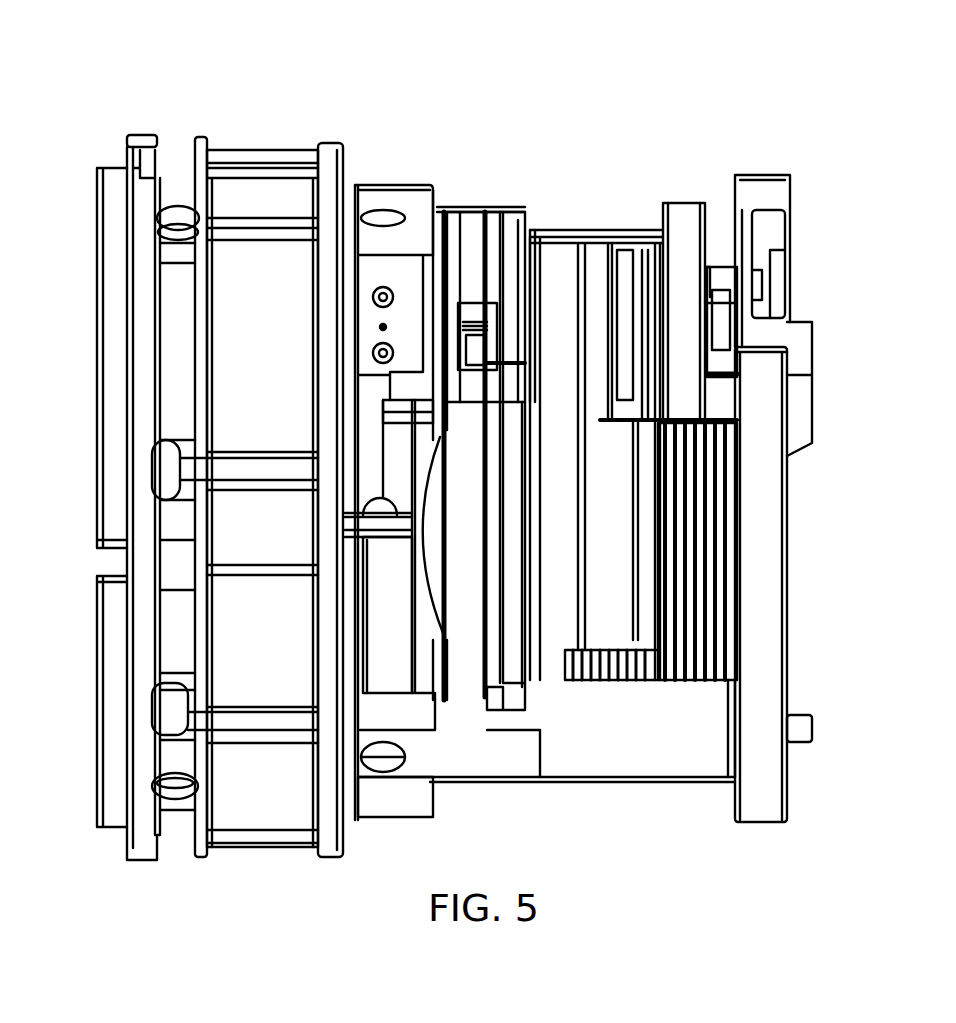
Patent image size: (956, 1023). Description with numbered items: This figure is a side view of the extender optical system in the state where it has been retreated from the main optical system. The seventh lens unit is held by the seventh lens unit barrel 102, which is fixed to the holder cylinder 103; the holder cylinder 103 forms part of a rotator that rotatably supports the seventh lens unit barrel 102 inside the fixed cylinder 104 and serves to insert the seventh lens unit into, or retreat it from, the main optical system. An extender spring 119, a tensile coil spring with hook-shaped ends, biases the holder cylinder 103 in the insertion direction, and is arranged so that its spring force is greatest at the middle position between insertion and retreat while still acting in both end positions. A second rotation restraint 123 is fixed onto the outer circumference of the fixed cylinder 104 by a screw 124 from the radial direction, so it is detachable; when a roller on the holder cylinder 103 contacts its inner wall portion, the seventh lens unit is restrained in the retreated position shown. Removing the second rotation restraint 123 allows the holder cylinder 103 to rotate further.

The seventh lens unit barrel 102 is at (487, 693).
The holder cylinder 103 is at (567, 620).
The fixed cylinder 104 is at (332, 178).
The extender spring 119 is at (478, 287).
The second rotation restraint 123 is at (423, 343).
The screw 124 is at (390, 287).